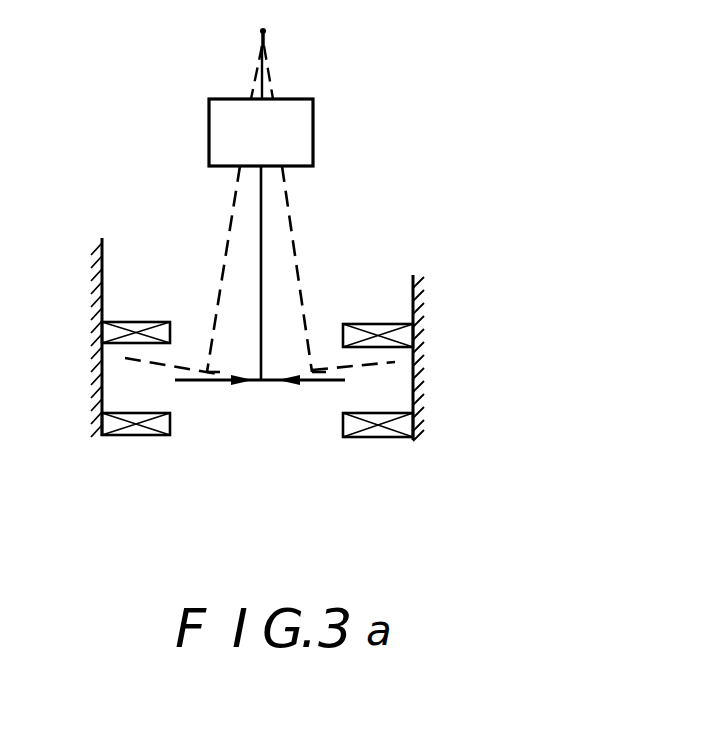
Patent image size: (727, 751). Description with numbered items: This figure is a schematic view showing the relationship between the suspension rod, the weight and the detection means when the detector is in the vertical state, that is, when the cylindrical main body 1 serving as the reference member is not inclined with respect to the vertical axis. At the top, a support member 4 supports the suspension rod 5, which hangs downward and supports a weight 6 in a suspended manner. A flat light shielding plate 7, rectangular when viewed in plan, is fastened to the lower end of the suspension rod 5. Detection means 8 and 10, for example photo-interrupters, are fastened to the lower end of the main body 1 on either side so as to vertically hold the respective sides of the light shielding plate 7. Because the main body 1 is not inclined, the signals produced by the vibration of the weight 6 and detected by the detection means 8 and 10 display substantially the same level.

The cylindrical main body 1 is at (413, 317).
The support member 4 is at (264, 30).
The suspension rod 5 is at (220, 260).
The weight 6 is at (298, 136).
The light shielding plate 7 is at (205, 382).
The detection means 8 is at (139, 446).
The detection means 10 is at (377, 448).